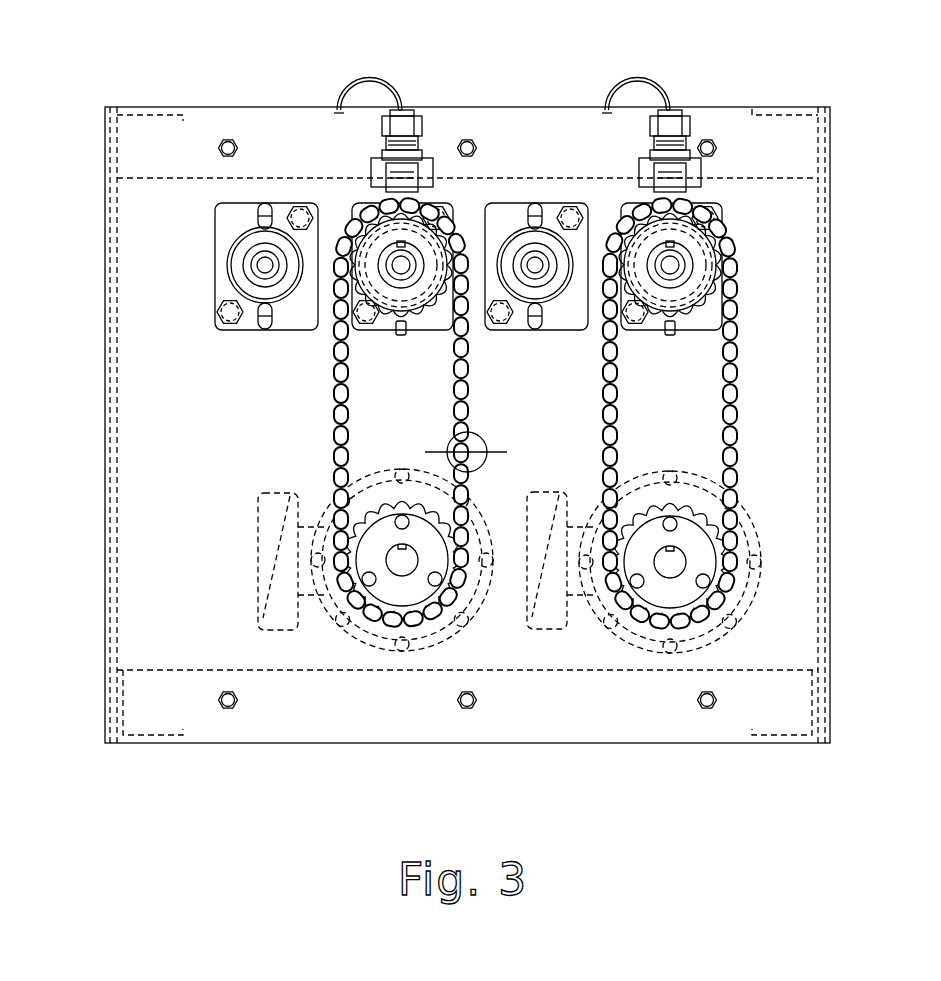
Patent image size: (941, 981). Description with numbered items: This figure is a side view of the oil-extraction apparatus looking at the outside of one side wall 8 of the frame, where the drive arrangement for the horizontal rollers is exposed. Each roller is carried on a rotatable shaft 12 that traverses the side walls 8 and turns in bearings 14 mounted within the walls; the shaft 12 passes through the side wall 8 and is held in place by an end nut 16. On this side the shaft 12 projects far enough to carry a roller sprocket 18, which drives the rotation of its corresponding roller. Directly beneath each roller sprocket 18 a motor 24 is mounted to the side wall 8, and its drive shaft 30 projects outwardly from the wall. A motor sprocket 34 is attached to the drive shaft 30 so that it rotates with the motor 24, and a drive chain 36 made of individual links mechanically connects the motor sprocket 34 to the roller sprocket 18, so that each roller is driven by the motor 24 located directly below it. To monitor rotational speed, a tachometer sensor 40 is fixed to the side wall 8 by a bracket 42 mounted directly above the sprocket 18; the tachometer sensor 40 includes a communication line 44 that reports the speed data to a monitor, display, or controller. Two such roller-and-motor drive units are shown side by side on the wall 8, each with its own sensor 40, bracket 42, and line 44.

The side wall 8 is at (832, 222).
The rotatable shaft 12 is at (408, 322).
The bearing 14 is at (245, 243).
The end nut 16 is at (257, 267).
The roller sprocket 18 is at (392, 328).
The motor 24 is at (265, 520).
The drive shaft 30 is at (393, 566).
The motor sprocket 34 is at (372, 500).
The drive chain 36 is at (467, 406).
The tachometer sensor 40 is at (404, 120).
The bracket 42 is at (432, 172).
The communication line 44 is at (380, 75).